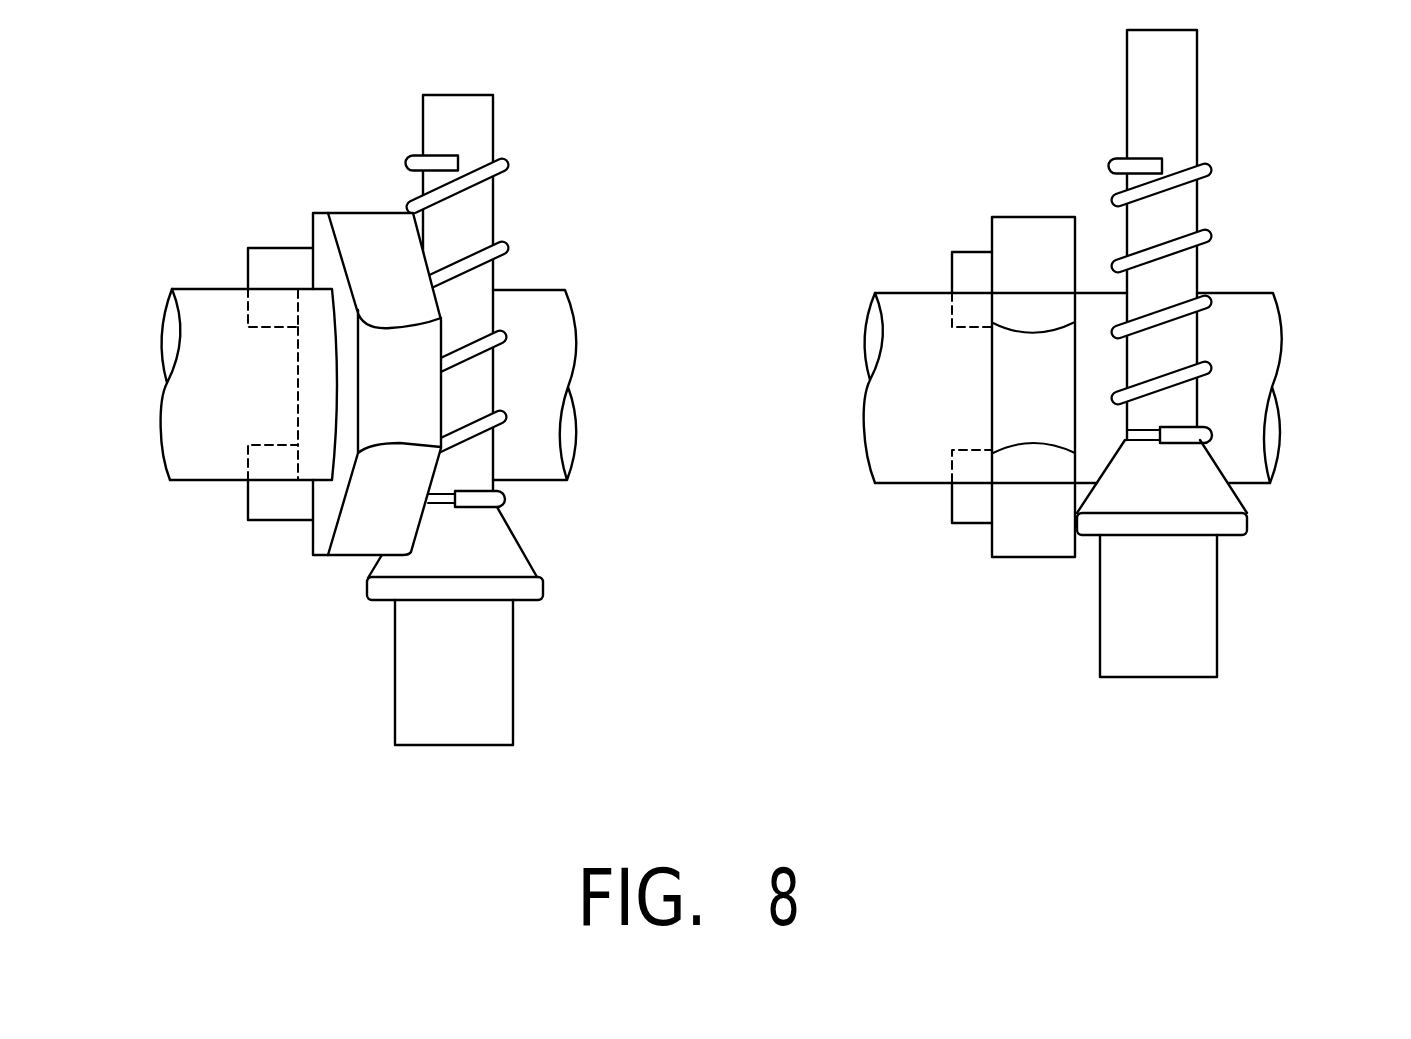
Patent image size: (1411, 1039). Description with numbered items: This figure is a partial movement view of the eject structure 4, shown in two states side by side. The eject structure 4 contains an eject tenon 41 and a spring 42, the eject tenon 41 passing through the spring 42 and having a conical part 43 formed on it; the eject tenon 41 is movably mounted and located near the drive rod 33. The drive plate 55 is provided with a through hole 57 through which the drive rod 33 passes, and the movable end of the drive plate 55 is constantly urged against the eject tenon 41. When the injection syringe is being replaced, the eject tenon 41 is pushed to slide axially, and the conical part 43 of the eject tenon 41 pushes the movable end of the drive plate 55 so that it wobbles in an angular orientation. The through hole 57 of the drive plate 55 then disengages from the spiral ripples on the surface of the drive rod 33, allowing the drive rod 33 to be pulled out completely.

The eject structure 4 is at (886, 387).
The drive rod 33 is at (217, 447).
The eject tenon 41 is at (468, 213).
The spring 42 is at (508, 243).
The conical part 43 is at (507, 547).
The drive plate 55 is at (355, 223).
The through hole 57 is at (337, 370).